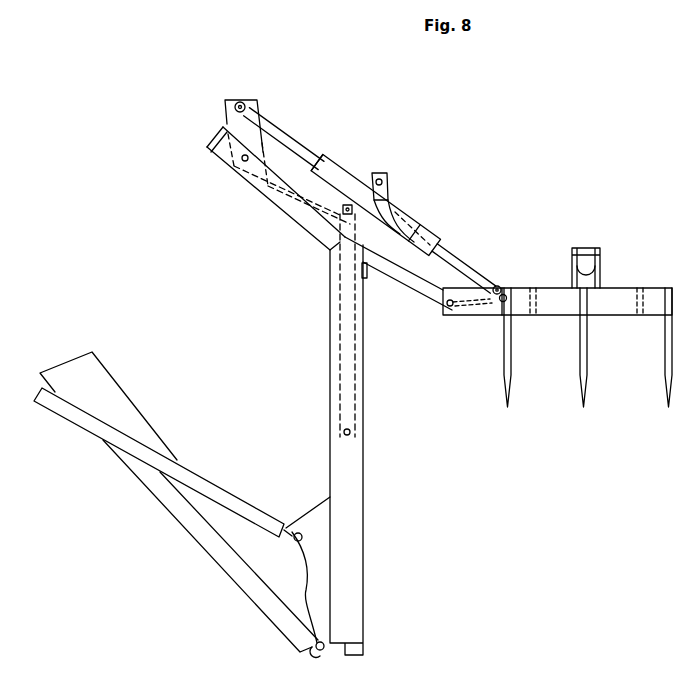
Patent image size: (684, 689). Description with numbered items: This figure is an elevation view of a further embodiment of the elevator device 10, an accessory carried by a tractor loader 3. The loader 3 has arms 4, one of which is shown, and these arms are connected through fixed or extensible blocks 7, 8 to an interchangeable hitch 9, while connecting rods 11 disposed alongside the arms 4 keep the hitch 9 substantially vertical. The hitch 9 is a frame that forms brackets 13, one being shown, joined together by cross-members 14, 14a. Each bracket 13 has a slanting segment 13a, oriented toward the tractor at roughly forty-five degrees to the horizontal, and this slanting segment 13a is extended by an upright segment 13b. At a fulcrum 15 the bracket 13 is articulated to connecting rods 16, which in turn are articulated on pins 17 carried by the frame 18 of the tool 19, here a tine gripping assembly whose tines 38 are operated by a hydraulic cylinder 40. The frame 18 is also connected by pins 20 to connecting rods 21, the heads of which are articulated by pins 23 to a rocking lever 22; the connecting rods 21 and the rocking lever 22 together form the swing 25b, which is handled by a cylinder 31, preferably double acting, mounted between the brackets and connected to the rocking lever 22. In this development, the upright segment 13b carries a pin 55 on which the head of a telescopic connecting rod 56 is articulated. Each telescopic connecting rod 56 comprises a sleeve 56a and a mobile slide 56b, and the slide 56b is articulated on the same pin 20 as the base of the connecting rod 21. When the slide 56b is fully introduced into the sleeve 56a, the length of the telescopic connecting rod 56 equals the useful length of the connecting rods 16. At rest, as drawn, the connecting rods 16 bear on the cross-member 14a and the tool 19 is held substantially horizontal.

The loader 3 is at (130, 475).
The arms 4 is at (123, 405).
The block 7 is at (292, 527).
The block 8 is at (310, 655).
The hitch 9 is at (293, 567).
The elevator device 10 is at (325, 352).
The connecting rods 11 is at (193, 477).
The brackets 13 is at (340, 455).
The slanting segment 13a is at (298, 218).
The upright segment 13b is at (236, 122).
The cross-member 14 is at (210, 134).
The cross-member 14a is at (362, 270).
The fulcrum 15 is at (240, 160).
The connecting rods 16 is at (410, 277).
The pins 17 is at (446, 316).
The frame 18 is at (483, 312).
The tool 19 is at (567, 375).
The pins 20 is at (503, 290).
The connecting rods 21 is at (393, 206).
The rocking lever 22 is at (360, 178).
The pins 23 is at (390, 185).
The piston rod 25b is at (275, 146).
The cylinder 31 is at (345, 317).
The tines 38 is at (665, 342).
The hydraulic cylinder 40 is at (587, 247).
The pin 55 is at (243, 103).
The telescopic connecting rods 56 is at (309, 150).
The sleeve 56a is at (319, 163).
The mobile slide 56b is at (457, 262).